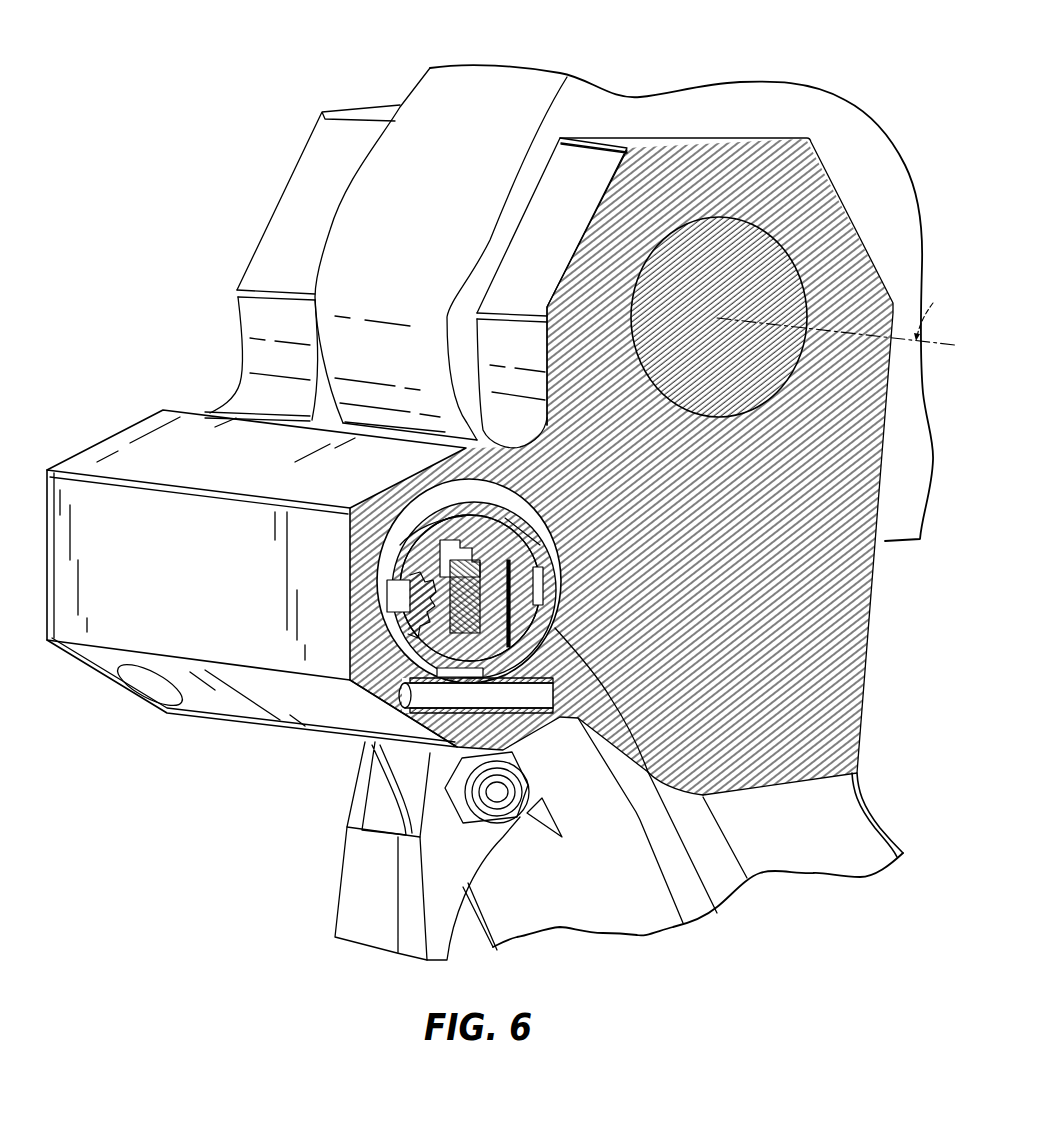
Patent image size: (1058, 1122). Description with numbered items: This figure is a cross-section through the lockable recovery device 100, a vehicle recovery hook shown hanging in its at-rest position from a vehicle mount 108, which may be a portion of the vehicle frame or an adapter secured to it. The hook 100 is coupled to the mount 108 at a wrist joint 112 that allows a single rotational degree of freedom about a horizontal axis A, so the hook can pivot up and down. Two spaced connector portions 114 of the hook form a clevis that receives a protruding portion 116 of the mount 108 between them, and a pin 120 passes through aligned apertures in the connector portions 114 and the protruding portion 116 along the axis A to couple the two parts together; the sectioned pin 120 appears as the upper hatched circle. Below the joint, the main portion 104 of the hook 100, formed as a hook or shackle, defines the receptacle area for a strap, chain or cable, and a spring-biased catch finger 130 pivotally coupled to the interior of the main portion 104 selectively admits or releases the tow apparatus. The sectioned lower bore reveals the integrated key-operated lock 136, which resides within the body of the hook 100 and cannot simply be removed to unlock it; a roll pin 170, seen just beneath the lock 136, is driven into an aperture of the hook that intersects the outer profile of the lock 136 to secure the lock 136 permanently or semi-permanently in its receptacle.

The lockable recovery device 100 is at (96, 316).
The main portion 104 is at (787, 843).
The vehicle mount 108 is at (890, 197).
The wrist joint 112 is at (693, 200).
The connector portions 114 is at (285, 230).
The protruding portion 116 is at (385, 193).
The pin 120 is at (720, 253).
The catch finger 130 is at (359, 893).
The lock 136 is at (717, 913).
The roll pin 170 is at (402, 693).